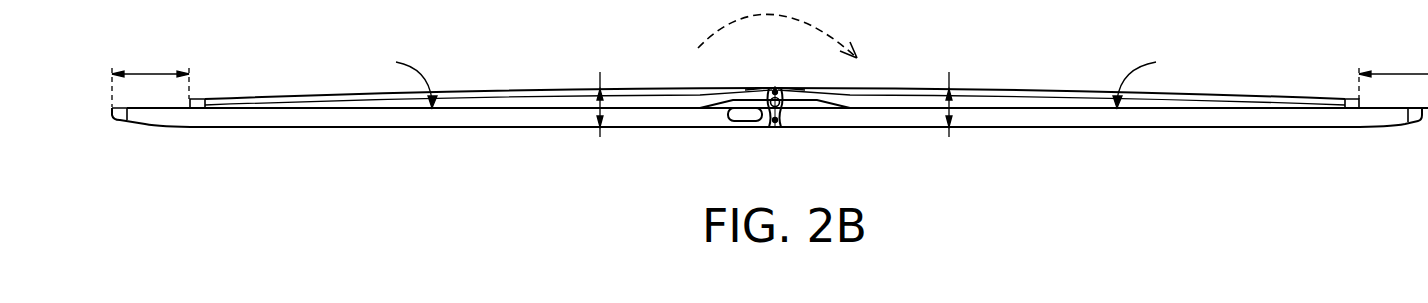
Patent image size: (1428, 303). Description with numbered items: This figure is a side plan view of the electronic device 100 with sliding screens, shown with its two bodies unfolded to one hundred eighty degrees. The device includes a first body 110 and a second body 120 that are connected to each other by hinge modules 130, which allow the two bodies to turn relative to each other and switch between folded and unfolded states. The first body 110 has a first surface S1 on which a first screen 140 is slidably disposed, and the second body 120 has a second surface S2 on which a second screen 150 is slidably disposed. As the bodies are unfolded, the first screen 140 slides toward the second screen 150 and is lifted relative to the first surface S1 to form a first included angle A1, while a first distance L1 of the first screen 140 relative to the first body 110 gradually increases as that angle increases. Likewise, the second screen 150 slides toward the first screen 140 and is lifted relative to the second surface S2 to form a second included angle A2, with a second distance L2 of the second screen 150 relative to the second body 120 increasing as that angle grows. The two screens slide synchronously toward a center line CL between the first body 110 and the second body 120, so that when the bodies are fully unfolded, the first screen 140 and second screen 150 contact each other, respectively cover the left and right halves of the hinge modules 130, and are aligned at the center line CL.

The electronic device with sliding screens 100 is at (1411, 180).
The first body 110 is at (468, 116).
The second body 120 is at (1080, 117).
The hinge modules 130 is at (777, 128).
The first screen 140 is at (466, 91).
The second screen 150 is at (1084, 91).
The center line CL is at (778, 91).
The first distance L1 is at (150, 74).
The second distance L2 is at (1393, 70).
The first included angle A1 is at (603, 101).
The second included angle A2 is at (946, 101).
The first surface S1 is at (403, 76).
The second surface S2 is at (1148, 76).